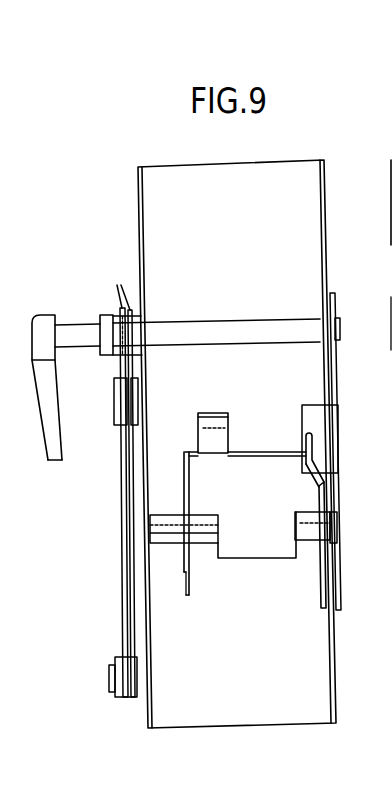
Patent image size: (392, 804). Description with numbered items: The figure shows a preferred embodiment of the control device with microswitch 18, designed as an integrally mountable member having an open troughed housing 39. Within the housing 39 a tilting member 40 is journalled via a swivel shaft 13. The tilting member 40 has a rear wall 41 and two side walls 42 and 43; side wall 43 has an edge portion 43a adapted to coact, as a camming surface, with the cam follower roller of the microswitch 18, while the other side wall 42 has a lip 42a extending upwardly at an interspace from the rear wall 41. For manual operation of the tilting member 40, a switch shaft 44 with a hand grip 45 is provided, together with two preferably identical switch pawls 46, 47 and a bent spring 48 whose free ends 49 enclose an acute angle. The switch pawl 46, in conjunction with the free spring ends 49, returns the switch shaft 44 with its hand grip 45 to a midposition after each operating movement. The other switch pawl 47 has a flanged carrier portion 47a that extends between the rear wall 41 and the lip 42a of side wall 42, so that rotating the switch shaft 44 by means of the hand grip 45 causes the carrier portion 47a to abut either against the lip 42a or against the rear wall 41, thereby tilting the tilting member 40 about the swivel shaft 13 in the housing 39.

The open troughed housing 39 is at (325, 253).
The switch shaft 44 is at (238, 320).
The hand grip 45 is at (53, 462).
The switch pawl 46 is at (115, 397).
The switch pawl 47 is at (333, 373).
The flanged carrier portion 47a is at (316, 414).
The bent spring 48 is at (122, 622).
The free ends 49 is at (115, 283).
The rear wall 41 is at (212, 485).
The side wall 42 is at (327, 578).
The lip 42a is at (323, 490).
The side wall 43 is at (187, 587).
The edge portion 43a is at (183, 562).
The swivel shaft 13 is at (310, 528).
The tilting member 40 is at (262, 570).
The microswitch 18 is at (385, 659).